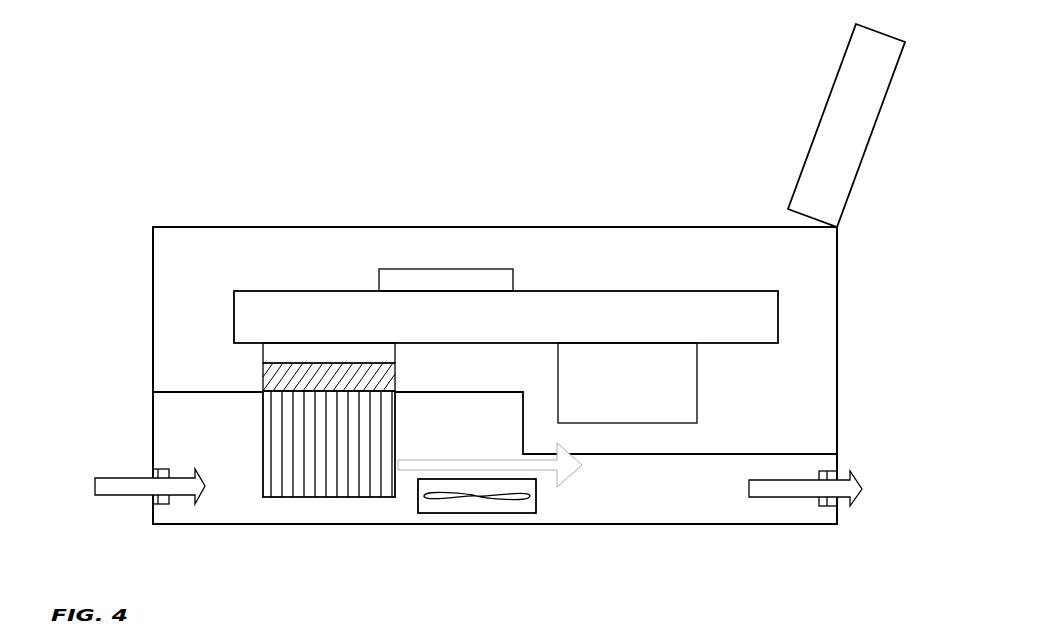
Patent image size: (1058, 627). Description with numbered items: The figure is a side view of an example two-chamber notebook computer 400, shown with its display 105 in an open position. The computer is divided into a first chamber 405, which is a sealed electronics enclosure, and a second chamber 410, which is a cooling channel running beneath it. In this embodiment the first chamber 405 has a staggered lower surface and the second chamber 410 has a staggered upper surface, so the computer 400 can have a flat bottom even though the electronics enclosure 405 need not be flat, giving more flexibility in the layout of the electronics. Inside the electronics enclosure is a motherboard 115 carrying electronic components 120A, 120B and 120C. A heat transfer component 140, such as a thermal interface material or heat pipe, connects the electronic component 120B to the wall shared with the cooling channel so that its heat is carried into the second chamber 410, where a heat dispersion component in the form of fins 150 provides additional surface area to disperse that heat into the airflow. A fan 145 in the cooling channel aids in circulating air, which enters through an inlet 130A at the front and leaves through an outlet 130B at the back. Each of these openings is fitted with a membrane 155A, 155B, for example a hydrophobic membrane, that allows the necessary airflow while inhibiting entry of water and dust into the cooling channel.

The two-chamber notebook computer 400 is at (116, 160).
The display 105 is at (818, 127).
The first chamber 405 is at (153, 321).
The second chamber 410 is at (153, 443).
The motherboard 115 is at (234, 322).
The electronic component 120A is at (379, 282).
The electronic component 120B is at (396, 348).
The electronic component 120C is at (697, 380).
The heat transfer component 140 is at (263, 385).
The heat dispersion component (fins) 150 is at (263, 450).
The fan 145 is at (487, 515).
The inlet 130A is at (153, 500).
The outlet 130B is at (840, 474).
The membrane 155A is at (168, 503).
The membrane 155B is at (833, 507).